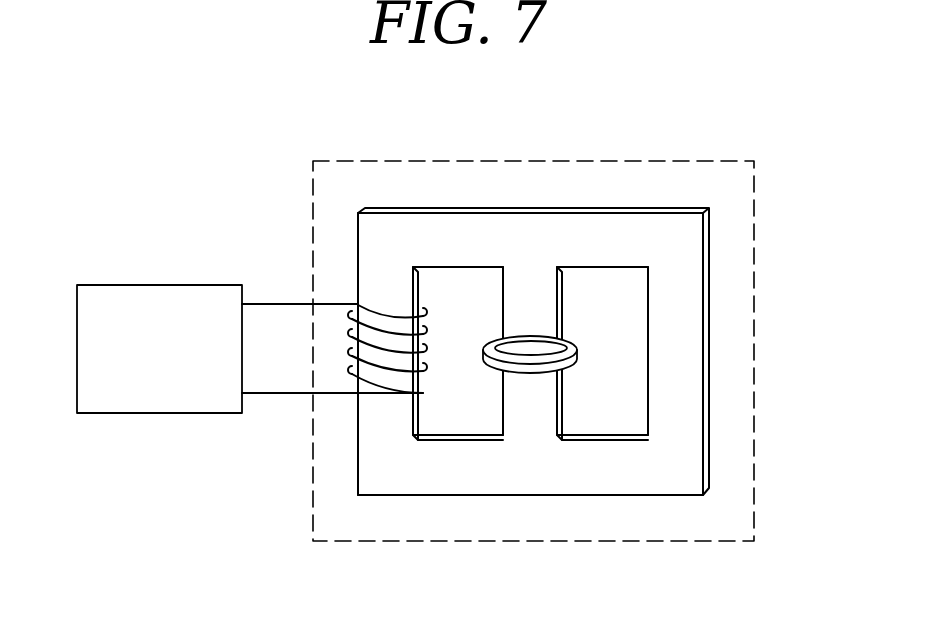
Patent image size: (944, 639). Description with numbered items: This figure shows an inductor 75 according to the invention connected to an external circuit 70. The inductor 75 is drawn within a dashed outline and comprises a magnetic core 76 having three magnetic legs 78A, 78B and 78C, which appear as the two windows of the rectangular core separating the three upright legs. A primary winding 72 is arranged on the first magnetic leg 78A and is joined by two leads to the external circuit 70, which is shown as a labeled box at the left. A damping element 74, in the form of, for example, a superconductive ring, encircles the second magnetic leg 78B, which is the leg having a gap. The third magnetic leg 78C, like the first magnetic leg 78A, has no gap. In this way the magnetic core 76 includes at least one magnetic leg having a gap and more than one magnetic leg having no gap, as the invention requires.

The external circuit 70 is at (185, 284).
The primary winding 72 is at (433, 307).
The damping element 74 is at (570, 343).
The inductor 75 is at (755, 350).
The magnetic core 76 is at (552, 196).
The first magnetic leg 78A is at (375, 417).
The second magnetic leg 78B is at (528, 417).
The third magnetic leg 78C is at (682, 415).